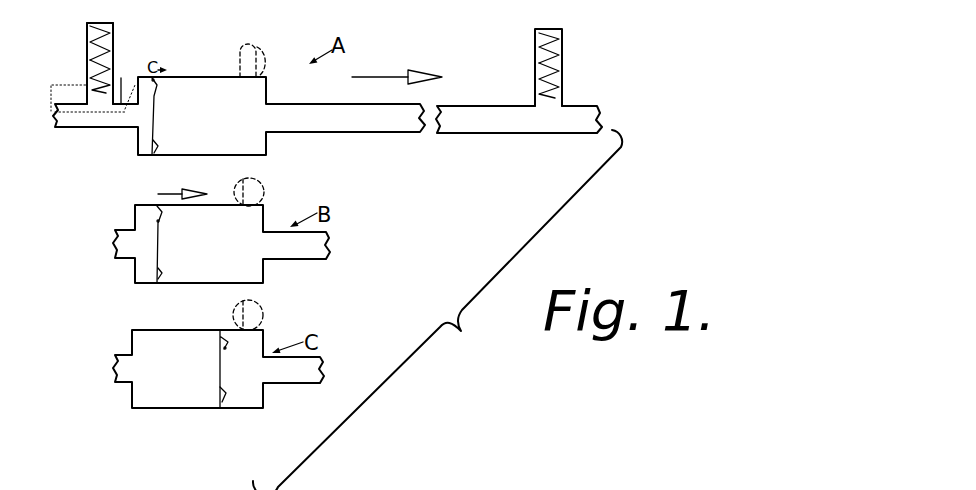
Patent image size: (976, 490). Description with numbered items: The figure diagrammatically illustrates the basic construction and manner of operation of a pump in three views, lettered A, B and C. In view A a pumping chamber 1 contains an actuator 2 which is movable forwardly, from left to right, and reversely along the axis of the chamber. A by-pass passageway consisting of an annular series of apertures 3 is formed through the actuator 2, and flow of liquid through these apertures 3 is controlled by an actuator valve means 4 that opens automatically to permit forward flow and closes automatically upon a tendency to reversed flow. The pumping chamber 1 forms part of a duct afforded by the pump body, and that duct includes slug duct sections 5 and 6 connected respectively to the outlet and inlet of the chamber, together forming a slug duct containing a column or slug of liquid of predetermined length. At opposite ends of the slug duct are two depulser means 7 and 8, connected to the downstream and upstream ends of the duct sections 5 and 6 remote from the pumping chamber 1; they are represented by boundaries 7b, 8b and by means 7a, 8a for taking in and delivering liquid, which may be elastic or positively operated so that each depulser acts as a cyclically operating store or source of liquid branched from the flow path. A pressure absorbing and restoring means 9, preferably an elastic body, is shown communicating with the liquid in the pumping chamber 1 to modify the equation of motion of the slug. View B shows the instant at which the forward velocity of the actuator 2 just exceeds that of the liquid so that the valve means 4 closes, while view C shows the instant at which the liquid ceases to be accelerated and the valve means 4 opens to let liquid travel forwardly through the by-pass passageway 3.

The pumping chamber 1 is at (208, 103).
The actuator 2 is at (156, 116).
The apertures 3 is at (153, 81).
The actuator valve means 4 is at (157, 146).
The slug duct section 5 is at (320, 118).
The slug duct section 6 is at (122, 81).
The depulser means 7 is at (540, 28).
The means for taking in and delivering liquid 7a is at (561, 44).
The boundary 7b is at (561, 79).
The depulser means 8 is at (114, 33).
The means for taking in and delivering liquid 8a is at (90, 72).
The boundary 8b is at (90, 37).
The pressure absorbing and restoring means 9 is at (266, 52).